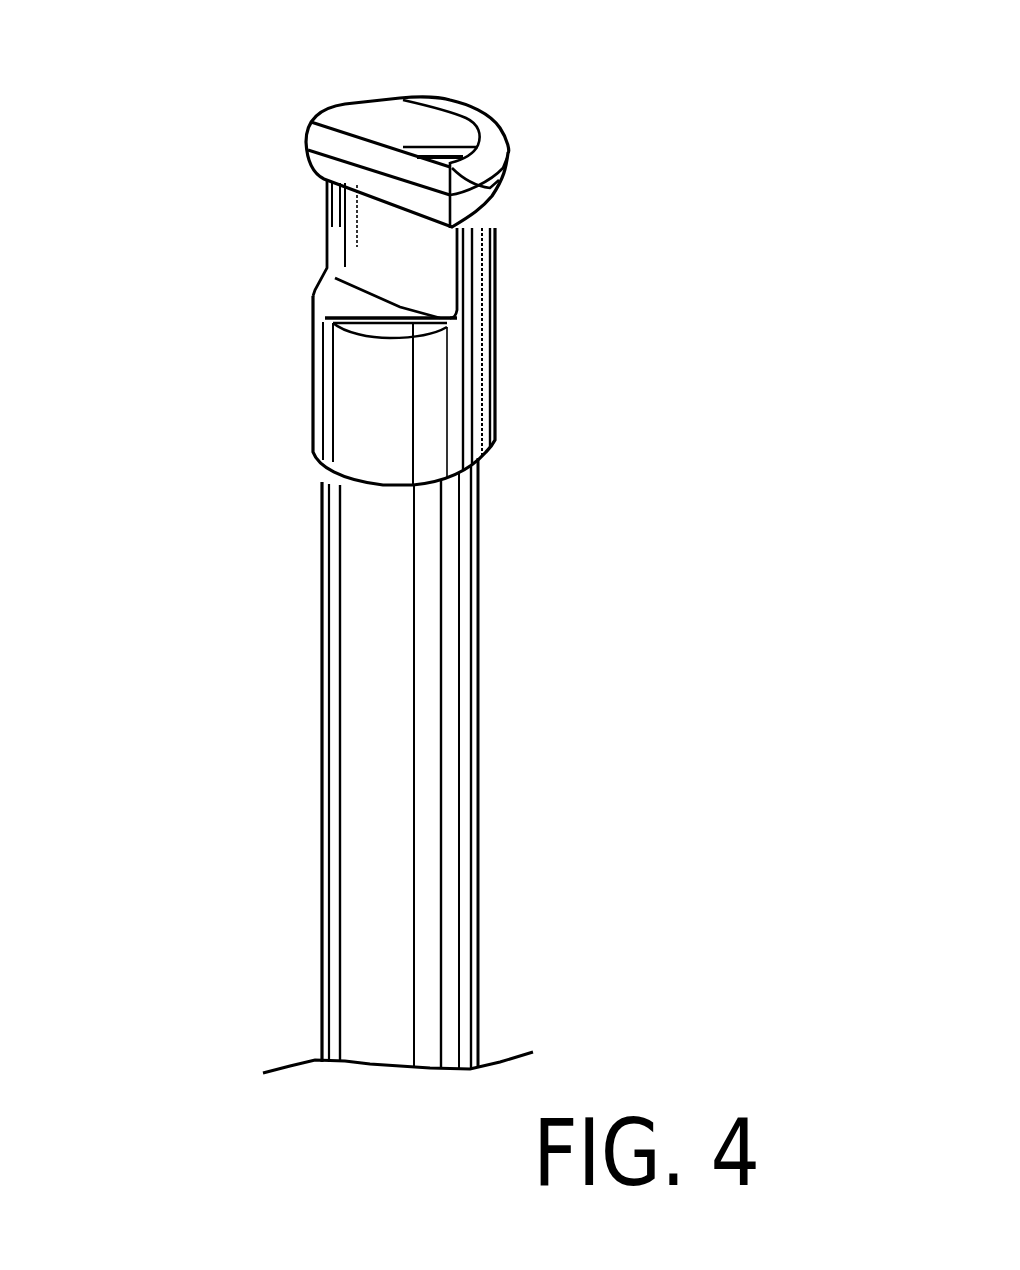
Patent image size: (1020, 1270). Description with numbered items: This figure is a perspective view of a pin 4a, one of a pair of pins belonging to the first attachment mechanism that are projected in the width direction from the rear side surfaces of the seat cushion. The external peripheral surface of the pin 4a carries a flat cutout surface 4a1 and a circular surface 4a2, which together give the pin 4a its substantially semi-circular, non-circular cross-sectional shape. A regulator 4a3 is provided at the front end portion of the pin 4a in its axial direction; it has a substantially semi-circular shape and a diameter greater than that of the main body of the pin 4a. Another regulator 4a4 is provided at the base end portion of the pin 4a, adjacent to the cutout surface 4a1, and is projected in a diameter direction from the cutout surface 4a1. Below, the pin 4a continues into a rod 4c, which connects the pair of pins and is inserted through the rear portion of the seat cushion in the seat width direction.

The pin 4a is at (425, 242).
The flat cutout surface 4a1 is at (407, 276).
The circular surface 4a2 is at (492, 236).
The regulator 4a3 is at (397, 118).
The regulator 4a4 is at (353, 307).
The rod 4c is at (370, 779).